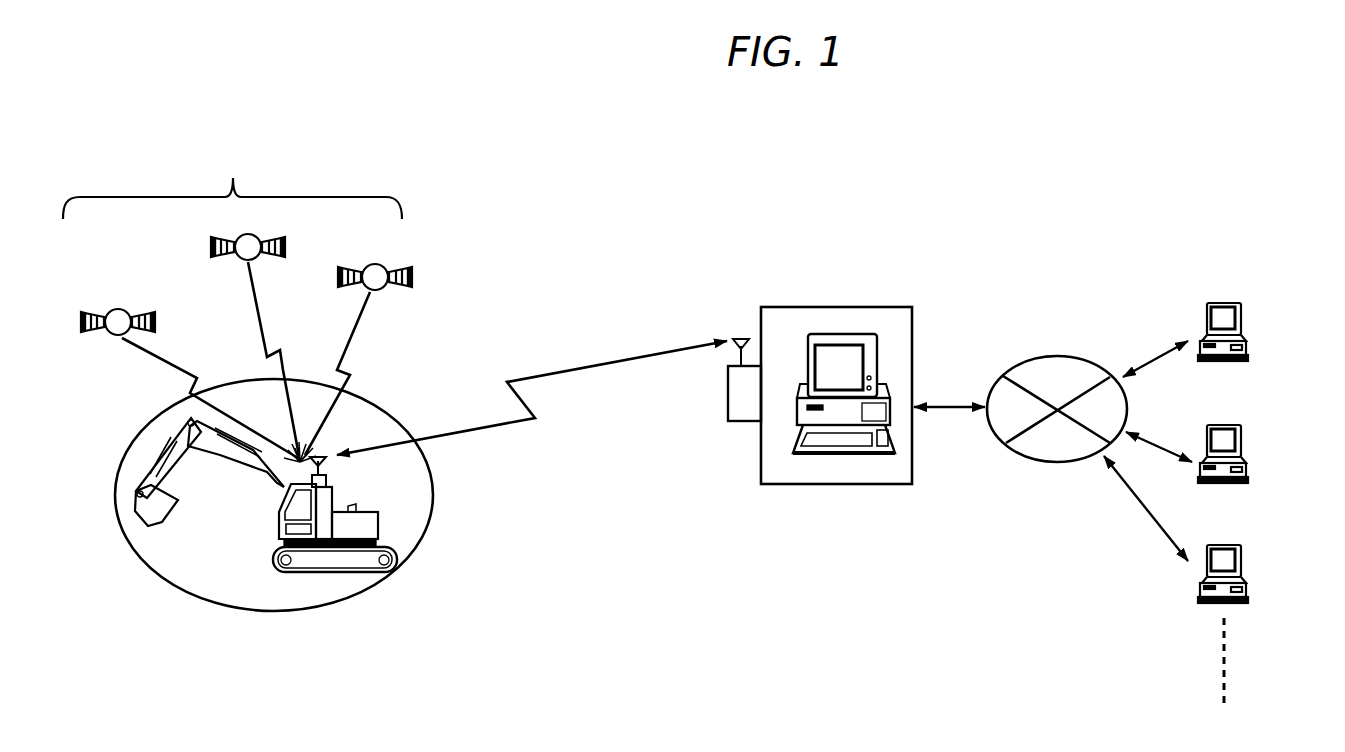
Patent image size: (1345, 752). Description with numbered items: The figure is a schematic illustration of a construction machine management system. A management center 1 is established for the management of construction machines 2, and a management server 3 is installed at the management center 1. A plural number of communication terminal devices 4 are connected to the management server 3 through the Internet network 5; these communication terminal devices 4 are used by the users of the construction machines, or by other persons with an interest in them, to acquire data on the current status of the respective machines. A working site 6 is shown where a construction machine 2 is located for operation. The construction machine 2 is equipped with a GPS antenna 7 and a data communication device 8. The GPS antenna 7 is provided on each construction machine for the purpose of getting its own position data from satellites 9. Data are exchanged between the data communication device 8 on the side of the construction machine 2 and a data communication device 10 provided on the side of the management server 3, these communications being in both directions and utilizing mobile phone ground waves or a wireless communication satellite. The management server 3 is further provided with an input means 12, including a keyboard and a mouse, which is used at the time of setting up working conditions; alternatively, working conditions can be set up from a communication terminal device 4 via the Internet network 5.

The management center 1 is at (858, 381).
The construction machine 2 is at (338, 545).
The management server 3 is at (840, 422).
The communication terminal device 4 is at (1245, 321).
The Internet network 5 is at (1052, 356).
The working site 6 is at (218, 607).
The GPS antenna 7 is at (280, 481).
The data communication device 8 is at (322, 478).
The satellites 9 is at (237, 233).
The data communication device 10 is at (728, 400).
The input means 12 is at (862, 442).